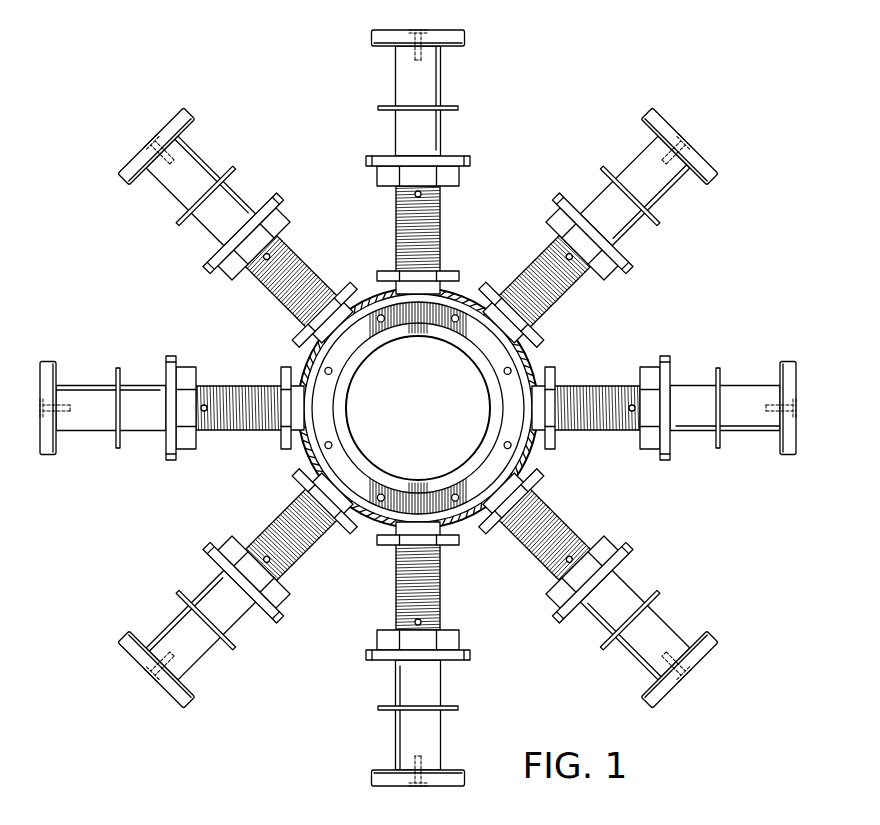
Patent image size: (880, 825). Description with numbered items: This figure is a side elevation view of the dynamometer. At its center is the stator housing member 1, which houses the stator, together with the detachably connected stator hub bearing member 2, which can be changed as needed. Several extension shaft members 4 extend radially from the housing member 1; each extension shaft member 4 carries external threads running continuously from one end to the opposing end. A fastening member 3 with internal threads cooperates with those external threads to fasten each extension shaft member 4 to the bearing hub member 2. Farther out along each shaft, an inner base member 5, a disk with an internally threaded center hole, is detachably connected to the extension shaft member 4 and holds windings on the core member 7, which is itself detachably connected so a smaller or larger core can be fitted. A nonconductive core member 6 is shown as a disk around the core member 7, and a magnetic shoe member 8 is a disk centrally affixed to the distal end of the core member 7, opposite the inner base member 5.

The stator housing member 1 is at (510, 397).
The stator hub bearing member 2 is at (298, 360).
The fastening member 3 is at (382, 272).
The extension shaft member 4 is at (440, 236).
The inner base member 5 is at (370, 160).
The nonconductive core member 6 is at (452, 108).
The core member 7 is at (397, 78).
The magnetic shoe member 8 is at (376, 40).